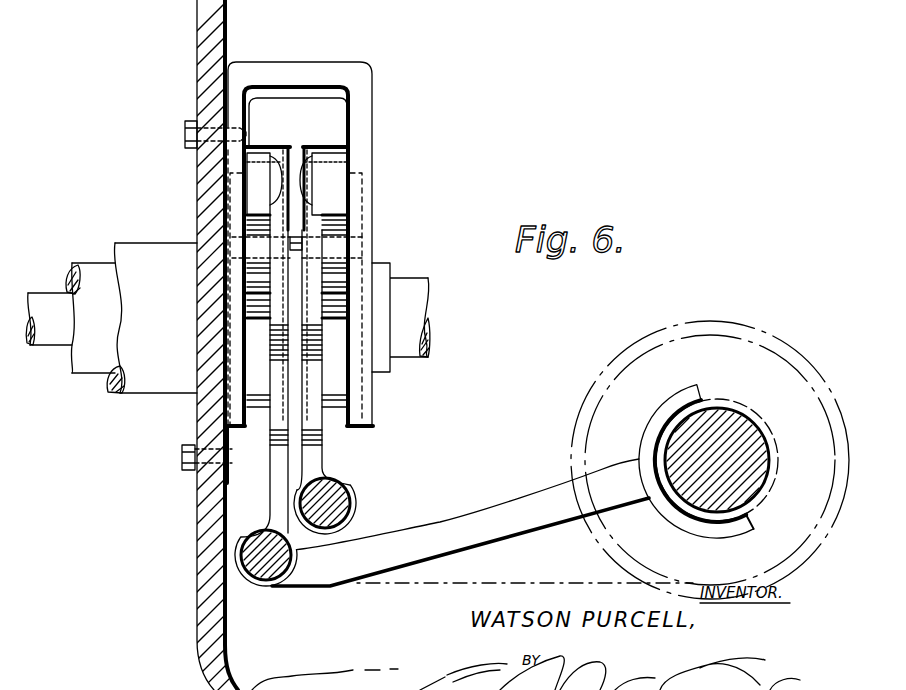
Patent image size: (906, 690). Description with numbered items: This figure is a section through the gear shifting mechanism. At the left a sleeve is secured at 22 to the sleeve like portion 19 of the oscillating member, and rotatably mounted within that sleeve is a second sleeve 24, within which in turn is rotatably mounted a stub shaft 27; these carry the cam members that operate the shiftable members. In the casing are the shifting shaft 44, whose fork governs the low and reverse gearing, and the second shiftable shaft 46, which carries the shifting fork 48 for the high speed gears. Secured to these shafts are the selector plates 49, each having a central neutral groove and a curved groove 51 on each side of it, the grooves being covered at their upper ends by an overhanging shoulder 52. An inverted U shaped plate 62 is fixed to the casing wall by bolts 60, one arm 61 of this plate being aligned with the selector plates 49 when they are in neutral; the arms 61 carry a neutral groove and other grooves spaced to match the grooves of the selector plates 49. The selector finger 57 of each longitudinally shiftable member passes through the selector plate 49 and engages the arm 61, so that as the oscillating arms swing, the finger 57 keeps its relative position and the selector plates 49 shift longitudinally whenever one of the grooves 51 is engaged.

The sleeve like portion 19 is at (347, 383).
The securing point 22 is at (268, 318).
The second sleeve 24 is at (92, 267).
The stub shaft 27 is at (45, 300).
The shifting shaft 44 is at (333, 502).
The second shiftable shaft 46 is at (262, 580).
The shifting fork 48 is at (464, 518).
The selector plate 49 is at (312, 283).
The groove 51 is at (330, 434).
The overhanging shoulder 52 is at (275, 147).
The selector finger 57 is at (332, 230).
The bolt 60 is at (190, 125).
The arm 61 is at (235, 207).
The inverted U shaped plate 62 is at (293, 62).